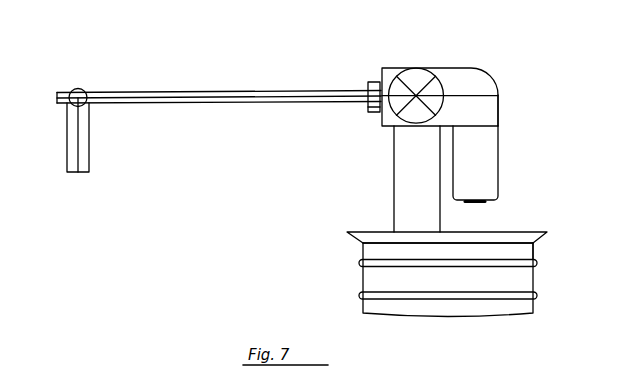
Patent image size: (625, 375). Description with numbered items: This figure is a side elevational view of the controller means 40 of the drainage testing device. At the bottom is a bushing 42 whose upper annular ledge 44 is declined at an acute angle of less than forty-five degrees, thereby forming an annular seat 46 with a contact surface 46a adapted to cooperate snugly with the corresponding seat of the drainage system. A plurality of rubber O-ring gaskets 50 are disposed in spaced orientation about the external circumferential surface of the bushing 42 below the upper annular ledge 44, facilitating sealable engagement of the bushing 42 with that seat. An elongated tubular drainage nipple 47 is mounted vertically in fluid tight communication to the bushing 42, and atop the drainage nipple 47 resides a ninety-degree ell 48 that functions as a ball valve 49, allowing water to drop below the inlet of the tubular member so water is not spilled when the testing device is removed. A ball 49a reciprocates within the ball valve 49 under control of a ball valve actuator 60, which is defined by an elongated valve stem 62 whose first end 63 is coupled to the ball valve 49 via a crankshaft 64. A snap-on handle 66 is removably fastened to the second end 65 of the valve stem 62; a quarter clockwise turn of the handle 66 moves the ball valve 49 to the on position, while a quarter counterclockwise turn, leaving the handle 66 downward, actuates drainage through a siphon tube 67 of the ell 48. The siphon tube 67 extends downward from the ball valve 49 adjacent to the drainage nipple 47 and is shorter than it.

The controller means 40 is at (528, 61).
The bushing 42 is at (521, 306).
The upper annular ledge 44 is at (545, 230).
The annular seat 46 is at (537, 238).
The contact surface 46a is at (538, 245).
The drainage nipple 47 is at (396, 172).
The 90° ell 48 is at (500, 108).
The ball valve 49 is at (455, 68).
The ball 49a is at (412, 68).
The O-ring gaskets 50 is at (388, 267).
The ball valve actuator 60 is at (218, 79).
The valve stem 62 is at (152, 103).
The first end 63 is at (368, 88).
The crankshaft 64 is at (375, 81).
The second end 65 is at (64, 91).
The snap-on handle 66 is at (67, 135).
The siphon tube 67 is at (500, 162).